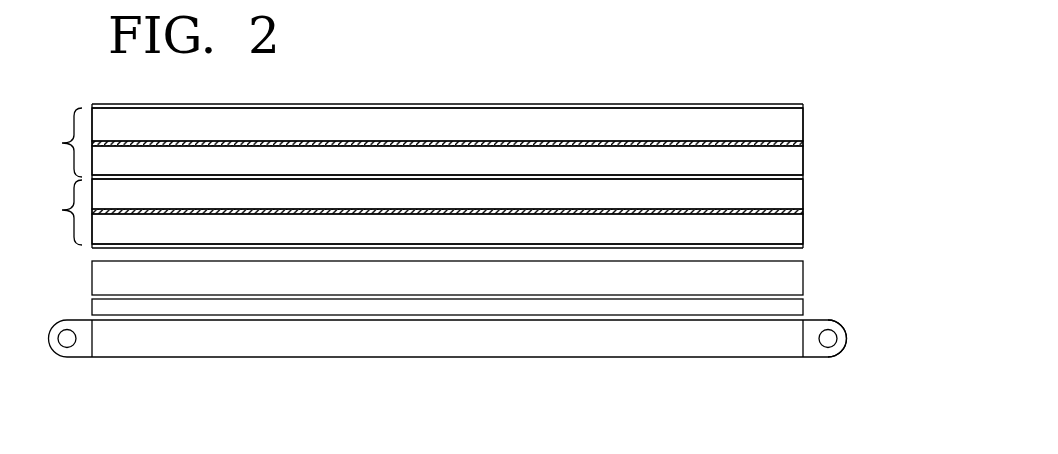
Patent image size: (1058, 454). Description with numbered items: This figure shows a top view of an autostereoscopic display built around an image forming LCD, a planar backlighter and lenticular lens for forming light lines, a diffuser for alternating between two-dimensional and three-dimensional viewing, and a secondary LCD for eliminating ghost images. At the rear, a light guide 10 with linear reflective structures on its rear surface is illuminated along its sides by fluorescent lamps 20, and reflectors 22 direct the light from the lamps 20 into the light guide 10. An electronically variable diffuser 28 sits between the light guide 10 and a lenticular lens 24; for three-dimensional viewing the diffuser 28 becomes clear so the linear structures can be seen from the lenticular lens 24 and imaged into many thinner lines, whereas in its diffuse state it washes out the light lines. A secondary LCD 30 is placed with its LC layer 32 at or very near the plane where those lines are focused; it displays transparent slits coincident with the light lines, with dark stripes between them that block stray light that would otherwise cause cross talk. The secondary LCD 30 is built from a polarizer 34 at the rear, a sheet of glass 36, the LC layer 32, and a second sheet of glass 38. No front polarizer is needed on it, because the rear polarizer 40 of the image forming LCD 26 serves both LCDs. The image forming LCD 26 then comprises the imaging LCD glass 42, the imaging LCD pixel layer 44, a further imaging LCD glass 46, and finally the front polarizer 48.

The light guide 10 is at (720, 357).
The fluorescent lamps 20 is at (837, 338).
The reflectors 22 is at (843, 352).
The lenticular lens 24 is at (803, 277).
The image forming LCD 26 is at (57, 142).
The electronically variable diffuser 28 is at (803, 303).
The secondary LCD 30 is at (57, 212).
The LC layer 32 is at (803, 211).
The polarizer 34 is at (803, 247).
The sheet of glass 36 is at (803, 229).
The second sheet of glass 38 is at (803, 194).
The rear polarizer 40 is at (803, 177).
The imaging LCD glass 42 is at (803, 160).
The imaging LCD pixel layer 44 is at (803, 143).
The imaging LCD glass 46 is at (803, 125).
The front polarizer 48 is at (803, 105).